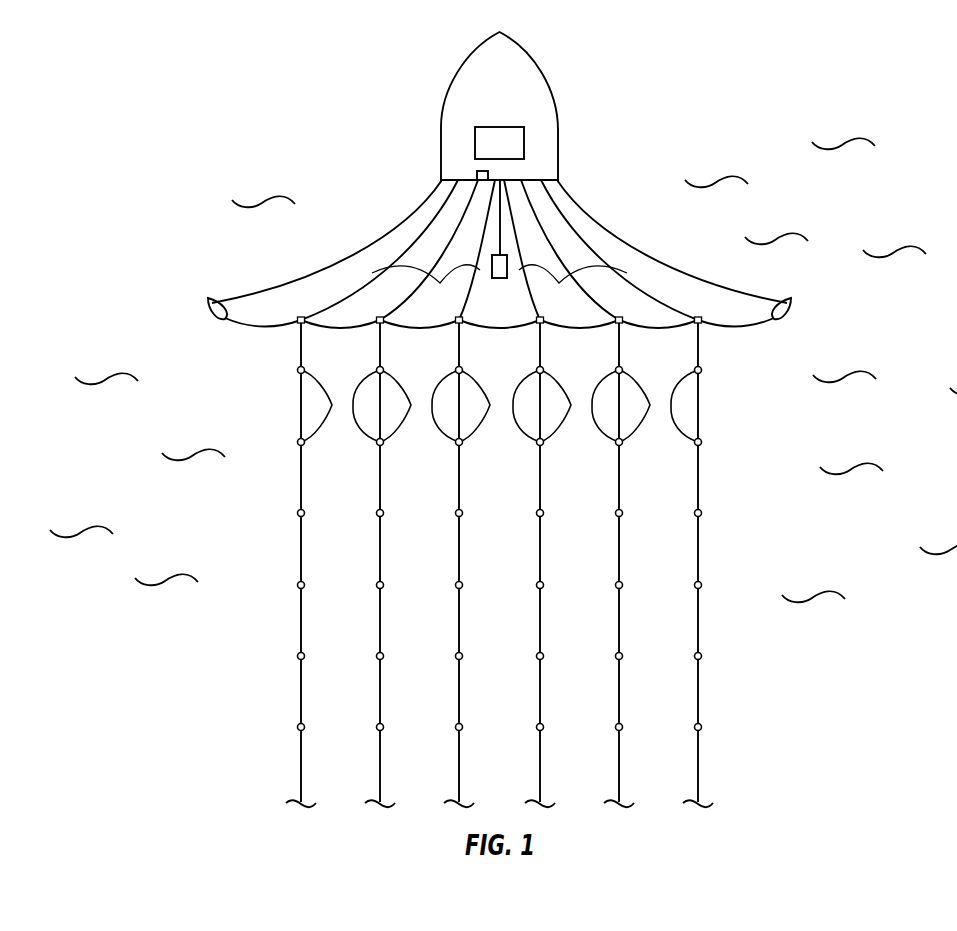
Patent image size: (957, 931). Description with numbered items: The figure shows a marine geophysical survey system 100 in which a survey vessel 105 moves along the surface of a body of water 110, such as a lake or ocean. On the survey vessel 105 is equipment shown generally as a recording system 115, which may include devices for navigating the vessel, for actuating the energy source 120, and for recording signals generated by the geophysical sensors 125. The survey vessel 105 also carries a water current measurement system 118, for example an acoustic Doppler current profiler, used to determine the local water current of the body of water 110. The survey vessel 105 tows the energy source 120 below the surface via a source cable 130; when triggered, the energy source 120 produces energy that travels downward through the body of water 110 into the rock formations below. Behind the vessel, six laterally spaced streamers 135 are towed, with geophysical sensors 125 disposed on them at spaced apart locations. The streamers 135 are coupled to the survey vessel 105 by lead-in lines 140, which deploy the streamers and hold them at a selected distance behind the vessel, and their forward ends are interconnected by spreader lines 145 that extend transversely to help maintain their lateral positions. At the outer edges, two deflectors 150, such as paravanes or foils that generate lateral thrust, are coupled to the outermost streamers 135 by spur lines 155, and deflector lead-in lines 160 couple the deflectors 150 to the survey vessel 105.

The marine geophysical survey system 100 is at (638, 134).
The survey vessel 105 is at (455, 83).
The body of water 110 is at (197, 179).
The recording system 115 is at (499, 127).
The water current measurement system 118 is at (477, 175).
The energy source 120 is at (500, 278).
The geophysical sensors 125 is at (500, 549).
The source cable 130 is at (500, 228).
The streamers 135 is at (300, 548).
The lead-in lines 140 is at (499, 291).
The spreader lines 145 is at (657, 333).
The deflectors 150 is at (210, 306).
The spur lines 155 is at (261, 328).
The deflector lead-in lines 160 is at (343, 265).